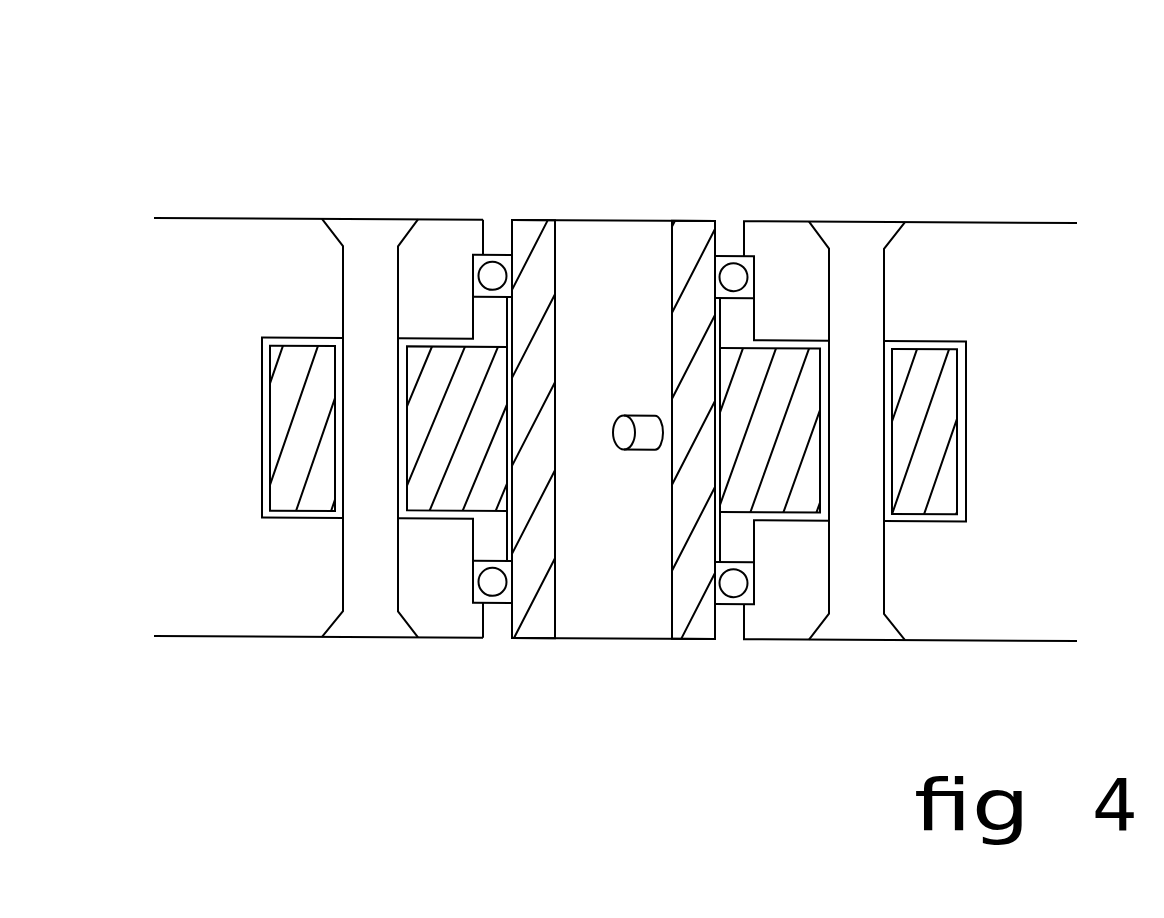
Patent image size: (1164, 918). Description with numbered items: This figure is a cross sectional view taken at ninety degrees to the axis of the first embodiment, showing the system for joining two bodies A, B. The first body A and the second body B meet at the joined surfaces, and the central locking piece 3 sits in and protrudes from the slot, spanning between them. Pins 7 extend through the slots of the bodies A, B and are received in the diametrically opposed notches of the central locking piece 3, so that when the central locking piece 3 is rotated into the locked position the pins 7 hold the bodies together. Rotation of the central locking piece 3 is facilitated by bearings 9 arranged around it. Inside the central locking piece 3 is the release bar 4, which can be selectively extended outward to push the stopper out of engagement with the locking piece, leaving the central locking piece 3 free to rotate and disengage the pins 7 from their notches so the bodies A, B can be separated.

The central locking piece 3 is at (647, 280).
The release bar 4 is at (627, 433).
The first pin 7 is at (372, 297).
The bearing 9 is at (733, 582).
The first body A is at (243, 577).
The second body B is at (988, 272).